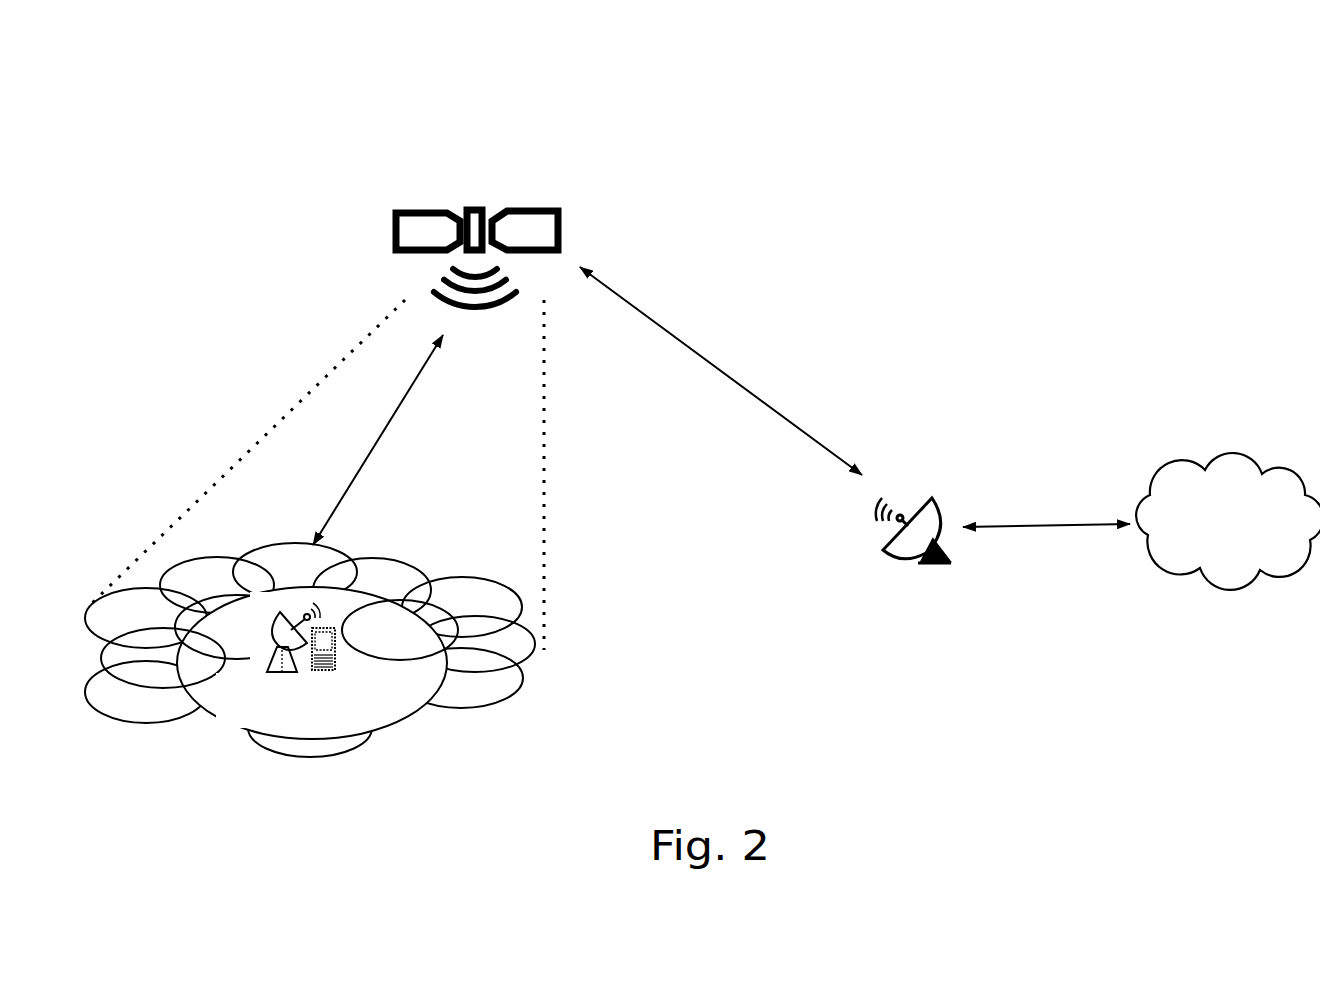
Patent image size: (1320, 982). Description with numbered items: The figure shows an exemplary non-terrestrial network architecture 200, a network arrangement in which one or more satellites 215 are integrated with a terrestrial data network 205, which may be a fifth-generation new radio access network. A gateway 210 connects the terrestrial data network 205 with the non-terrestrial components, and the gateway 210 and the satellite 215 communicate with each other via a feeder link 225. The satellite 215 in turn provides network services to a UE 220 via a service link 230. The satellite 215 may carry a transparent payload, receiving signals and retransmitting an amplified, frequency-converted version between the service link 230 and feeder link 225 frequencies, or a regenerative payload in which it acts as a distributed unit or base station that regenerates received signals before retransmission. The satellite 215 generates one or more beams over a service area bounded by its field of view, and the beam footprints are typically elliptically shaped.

The non-terrestrial network architecture 200 is at (316, 154).
The data network 205 is at (1141, 521).
The gateway 210 is at (928, 554).
The satellite 215 is at (477, 233).
The UE 220 is at (296, 660).
The feeder link 225 is at (721, 371).
The service link 230 is at (395, 440).